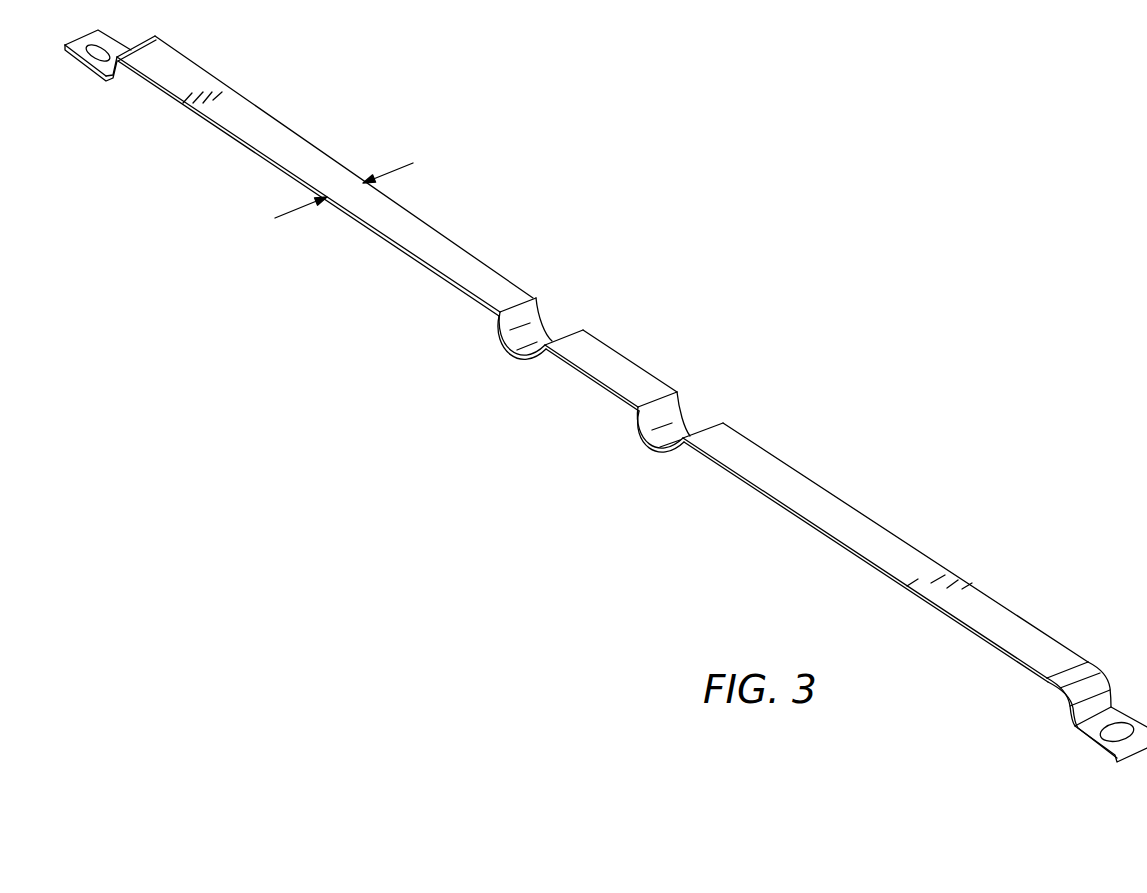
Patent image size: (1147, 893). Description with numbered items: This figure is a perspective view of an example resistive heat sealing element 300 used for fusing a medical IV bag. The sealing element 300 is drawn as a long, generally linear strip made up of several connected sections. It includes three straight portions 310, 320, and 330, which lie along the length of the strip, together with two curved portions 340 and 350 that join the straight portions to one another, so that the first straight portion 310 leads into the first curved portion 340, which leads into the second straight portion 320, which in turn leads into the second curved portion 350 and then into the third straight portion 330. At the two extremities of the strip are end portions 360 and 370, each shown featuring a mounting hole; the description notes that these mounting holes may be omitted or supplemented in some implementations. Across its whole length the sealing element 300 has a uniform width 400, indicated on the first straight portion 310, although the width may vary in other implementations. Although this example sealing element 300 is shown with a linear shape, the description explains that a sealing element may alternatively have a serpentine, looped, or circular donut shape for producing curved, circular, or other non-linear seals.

The resistive heat sealing element 300 is at (599, 405).
The straight portion 310 is at (252, 152).
The straight portion 320 is at (593, 385).
The straight portion 330 is at (828, 542).
The curved portion 340 is at (510, 353).
The curved portion 350 is at (649, 451).
The end portion 360 is at (75, 57).
The end portion 370 is at (1078, 735).
The width 400 is at (385, 172).